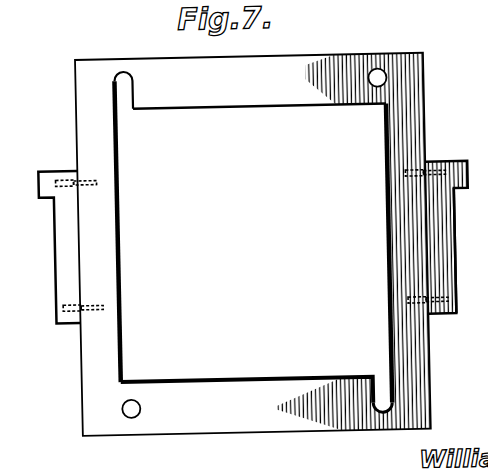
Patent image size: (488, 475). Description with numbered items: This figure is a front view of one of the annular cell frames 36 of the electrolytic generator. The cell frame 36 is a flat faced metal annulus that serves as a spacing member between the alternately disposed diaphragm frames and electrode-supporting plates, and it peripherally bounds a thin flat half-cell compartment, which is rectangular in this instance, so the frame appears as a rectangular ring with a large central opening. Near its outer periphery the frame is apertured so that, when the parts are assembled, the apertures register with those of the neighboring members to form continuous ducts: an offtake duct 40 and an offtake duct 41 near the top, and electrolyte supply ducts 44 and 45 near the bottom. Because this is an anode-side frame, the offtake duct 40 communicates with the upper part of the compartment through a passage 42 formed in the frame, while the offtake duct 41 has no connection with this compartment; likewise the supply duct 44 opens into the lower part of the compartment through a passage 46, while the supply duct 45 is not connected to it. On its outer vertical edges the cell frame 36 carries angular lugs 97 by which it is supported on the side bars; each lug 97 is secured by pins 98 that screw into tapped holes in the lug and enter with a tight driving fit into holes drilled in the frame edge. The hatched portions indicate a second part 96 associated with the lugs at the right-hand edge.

The cell frame 36 is at (318, 68).
The offtake duct 40 is at (124, 73).
The offtake duct 41 is at (379, 76).
The passage 42 is at (112, 100).
The electrolyte supply duct 44 is at (379, 417).
The electrolyte supply duct 45 is at (122, 420).
The passage 46 is at (388, 392).
The bracket flange 96 is at (442, 300).
The angular lug 97 is at (58, 238).
The pin 98 is at (63, 179).